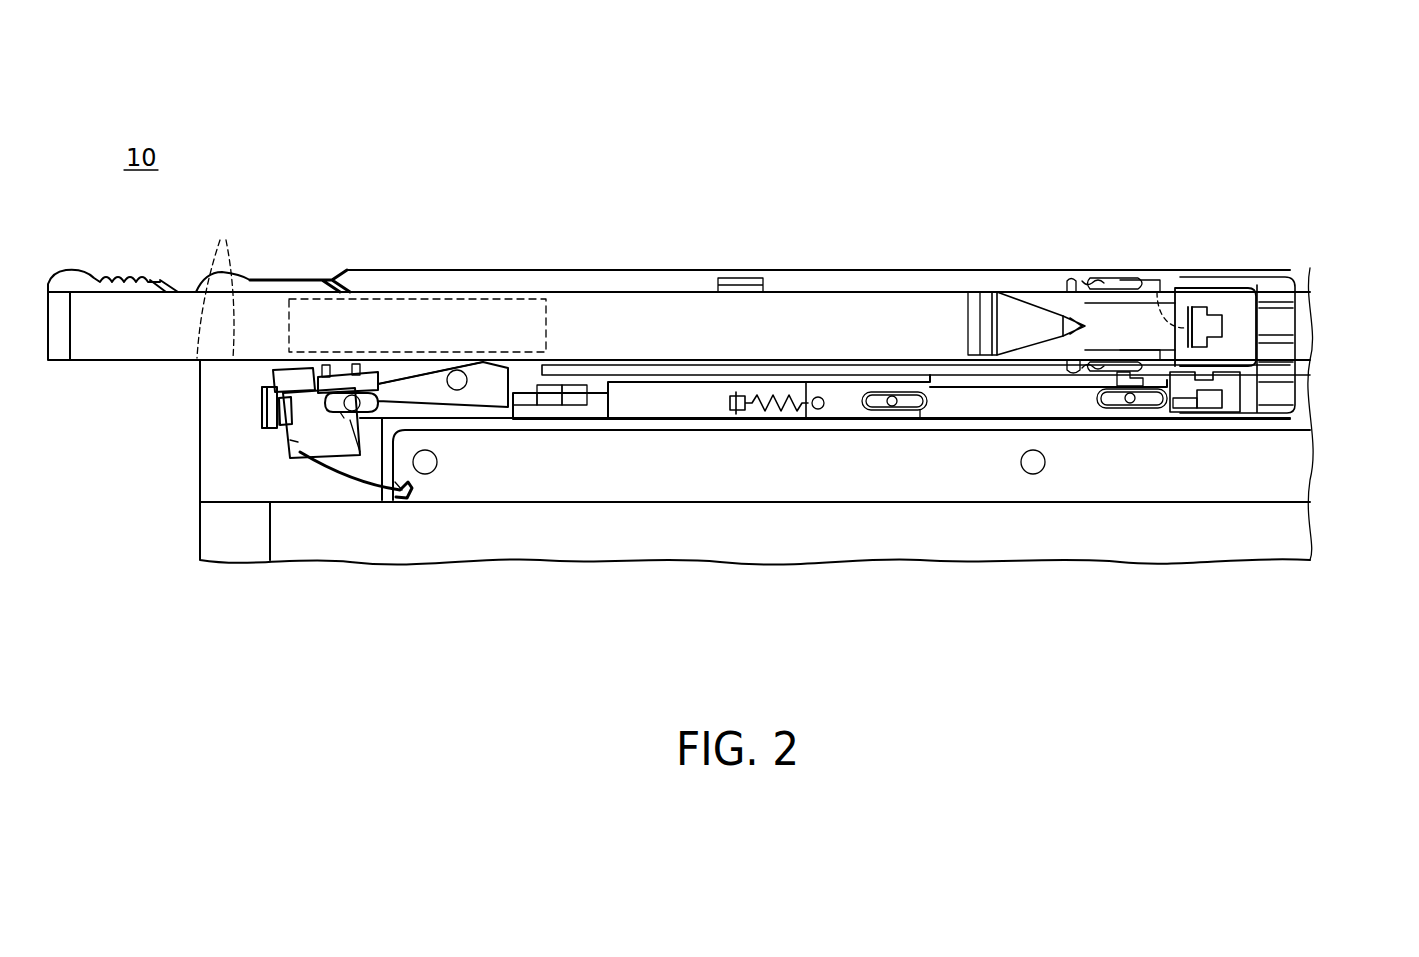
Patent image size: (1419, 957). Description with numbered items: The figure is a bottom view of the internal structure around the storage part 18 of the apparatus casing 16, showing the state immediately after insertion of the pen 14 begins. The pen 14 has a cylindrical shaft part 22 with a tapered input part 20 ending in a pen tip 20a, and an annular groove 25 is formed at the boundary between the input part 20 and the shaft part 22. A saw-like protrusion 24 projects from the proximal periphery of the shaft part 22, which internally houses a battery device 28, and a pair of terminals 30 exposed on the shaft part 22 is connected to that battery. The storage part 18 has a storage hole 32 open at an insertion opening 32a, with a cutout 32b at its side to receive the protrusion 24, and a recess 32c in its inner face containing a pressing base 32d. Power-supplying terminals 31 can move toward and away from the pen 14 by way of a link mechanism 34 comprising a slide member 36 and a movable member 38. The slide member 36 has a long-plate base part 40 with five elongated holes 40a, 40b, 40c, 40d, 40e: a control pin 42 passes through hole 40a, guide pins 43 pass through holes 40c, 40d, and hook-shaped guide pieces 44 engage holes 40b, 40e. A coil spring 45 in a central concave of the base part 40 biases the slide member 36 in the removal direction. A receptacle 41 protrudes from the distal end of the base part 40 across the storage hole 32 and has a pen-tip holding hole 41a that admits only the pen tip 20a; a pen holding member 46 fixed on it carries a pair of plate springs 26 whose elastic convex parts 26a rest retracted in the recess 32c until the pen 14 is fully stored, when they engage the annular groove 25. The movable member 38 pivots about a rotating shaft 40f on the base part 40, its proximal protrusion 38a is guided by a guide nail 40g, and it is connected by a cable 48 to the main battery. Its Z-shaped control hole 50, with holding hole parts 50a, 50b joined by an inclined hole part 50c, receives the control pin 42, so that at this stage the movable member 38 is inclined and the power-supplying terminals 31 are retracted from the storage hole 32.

The pen 14 is at (632, 291).
The apparatus casing 16 is at (227, 532).
The storage part 18 is at (247, 378).
The input part 20 is at (1005, 305).
The pen tip 20a is at (1066, 320).
The shaft part 22 is at (797, 303).
The protrusion 24 is at (118, 290).
The annular groove 25 is at (948, 300).
The plate spring 26 is at (1190, 308).
The elastic convex part 26a is at (1100, 278).
The battery device 28 is at (497, 299).
The terminal 30 is at (223, 284).
The power-supplying terminal 31 is at (355, 364).
The storage hole 32 is at (676, 298).
The insertion opening 32a is at (198, 361).
The cutout 32b is at (276, 290).
The recess 32c is at (1063, 300).
The pressing base 32d is at (1130, 285).
The link mechanism 34 is at (878, 448).
The slide member 36 is at (519, 419).
The movable member 38 is at (305, 456).
The protrusion 38a is at (263, 417).
The base part 40 is at (842, 400).
The elongated hole 40a is at (340, 416).
The elongated hole 40b is at (580, 410).
The elongated hole 40c is at (920, 412).
The elongated hole 40d is at (1122, 386).
The elongated hole 40e is at (1240, 412).
The rotating shaft 40f is at (462, 380).
The guide nail 40g is at (262, 398).
The receptacle 41 is at (1200, 302).
The pen-tip holding hole 41a is at (1158, 290).
The control pin 42 is at (352, 425).
The guide pin 43 is at (892, 405).
The guide piece 44 is at (550, 405).
The coil spring 45 is at (778, 405).
The pen holding member 46 is at (1240, 366).
The cable 48 is at (395, 482).
The control hole 50 is at (328, 412).
The holding hole part 50a is at (372, 392).
The holding hole part 50b is at (284, 439).
The inclined hole part 50c is at (352, 412).